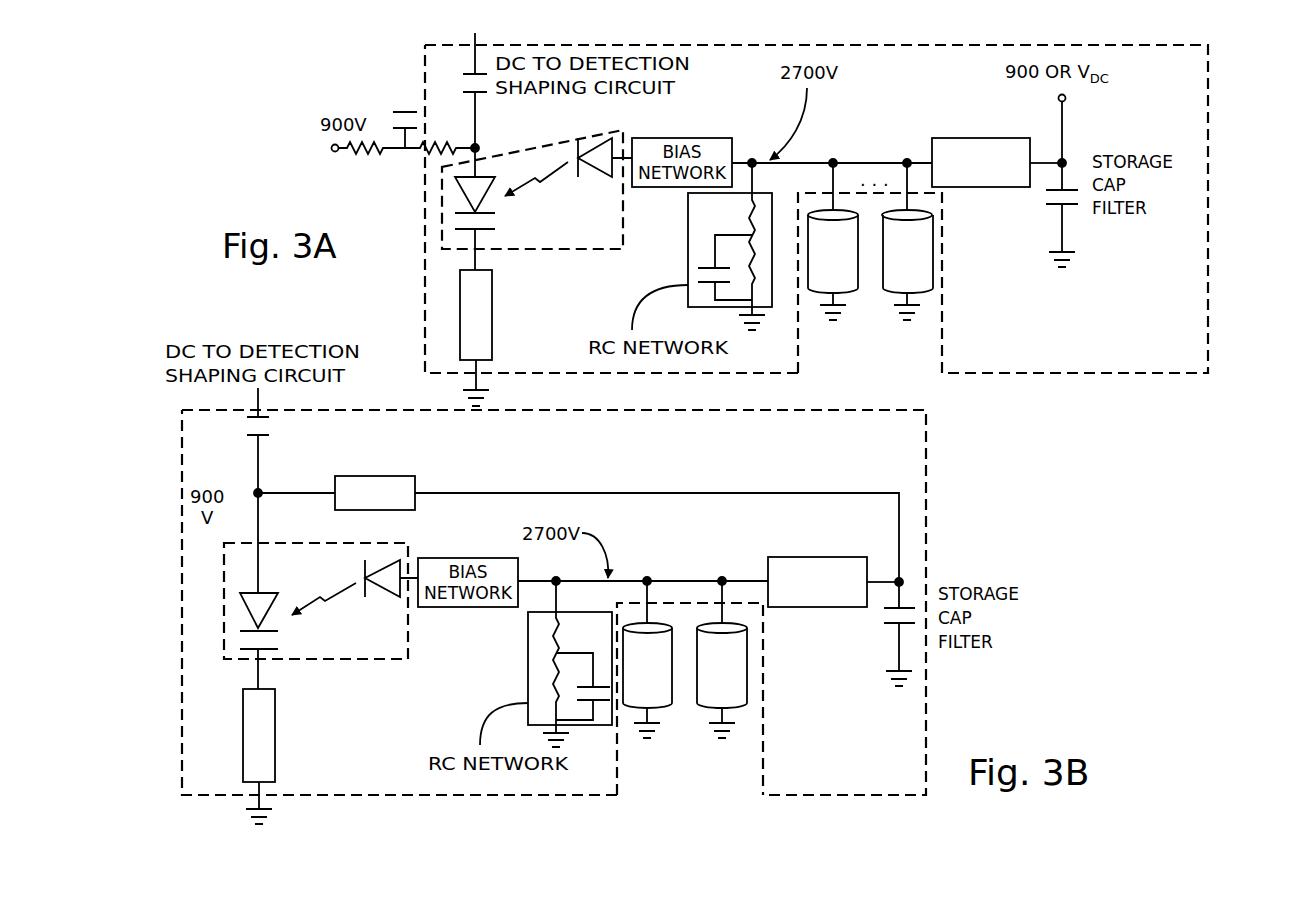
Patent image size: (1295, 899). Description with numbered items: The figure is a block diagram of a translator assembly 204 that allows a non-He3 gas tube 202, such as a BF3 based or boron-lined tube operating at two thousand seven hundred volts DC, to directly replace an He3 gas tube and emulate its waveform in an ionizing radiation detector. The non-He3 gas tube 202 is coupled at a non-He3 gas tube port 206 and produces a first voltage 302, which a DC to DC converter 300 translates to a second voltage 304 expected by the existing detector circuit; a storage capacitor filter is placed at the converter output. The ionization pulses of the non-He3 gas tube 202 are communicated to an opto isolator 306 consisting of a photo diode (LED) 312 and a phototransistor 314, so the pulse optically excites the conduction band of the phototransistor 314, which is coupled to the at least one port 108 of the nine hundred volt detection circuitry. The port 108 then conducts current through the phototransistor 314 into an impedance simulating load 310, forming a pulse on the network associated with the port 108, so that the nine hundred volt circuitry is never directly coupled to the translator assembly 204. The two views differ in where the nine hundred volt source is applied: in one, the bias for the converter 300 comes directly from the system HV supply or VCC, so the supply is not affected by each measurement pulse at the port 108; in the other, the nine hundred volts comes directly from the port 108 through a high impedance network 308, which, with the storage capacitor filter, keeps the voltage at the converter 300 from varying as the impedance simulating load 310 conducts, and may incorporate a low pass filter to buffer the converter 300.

In FIG. 3A, the at least one port 108 is at (480, 148).
In FIG. 3B, the at least one port 108 is at (262, 491).
In FIG. 3A, the non-He3 gas tube 202 is at (933, 250).
In FIG. 3B, the non-He3 gas tube 202 is at (747, 660).
In FIG. 3A, the translator assembly 204 is at (1210, 148).
In FIG. 3B, the translator assembly 204 is at (927, 450).
In FIG. 3A, the non-He3 gas tube port 206 is at (905, 158).
In FIG. 3B, the non-He3 gas tube port 206 is at (722, 578).
In FIG. 3A, the DC to DC converter 300 is at (1000, 138).
In FIG. 3B, the DC to DC converter 300 is at (810, 557).
In FIG. 3A, the first voltage V1(ω) 302 is at (925, 158).
In FIG. 3B, the first voltage V1(ω) 302 is at (745, 578).
In FIG. 3A, the second voltage V2(ω) 304 is at (1042, 168).
In FIG. 3B, the second voltage V2(ω) 304 is at (877, 590).
In FIG. 3A, the opto isolator 306 is at (442, 232).
In FIG. 3B, the opto isolator 306 is at (224, 553).
In FIG. 3B, the high impedance network 308 is at (386, 476).
In FIG. 3A, the impedance simulating load 310 is at (492, 328).
In FIG. 3B, the impedance simulating load 310 is at (275, 762).
In FIG. 3A, the photo diode (LED) 312 is at (612, 138).
In FIG. 3B, the photo diode (LED) 312 is at (385, 560).
In FIG. 3A, the phototransistor 314 is at (495, 176).
In FIG. 3B, the phototransistor 314 is at (278, 593).